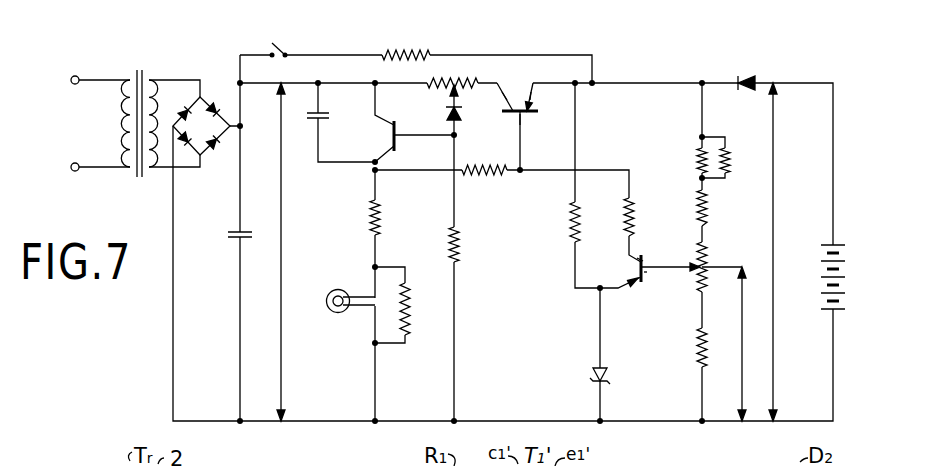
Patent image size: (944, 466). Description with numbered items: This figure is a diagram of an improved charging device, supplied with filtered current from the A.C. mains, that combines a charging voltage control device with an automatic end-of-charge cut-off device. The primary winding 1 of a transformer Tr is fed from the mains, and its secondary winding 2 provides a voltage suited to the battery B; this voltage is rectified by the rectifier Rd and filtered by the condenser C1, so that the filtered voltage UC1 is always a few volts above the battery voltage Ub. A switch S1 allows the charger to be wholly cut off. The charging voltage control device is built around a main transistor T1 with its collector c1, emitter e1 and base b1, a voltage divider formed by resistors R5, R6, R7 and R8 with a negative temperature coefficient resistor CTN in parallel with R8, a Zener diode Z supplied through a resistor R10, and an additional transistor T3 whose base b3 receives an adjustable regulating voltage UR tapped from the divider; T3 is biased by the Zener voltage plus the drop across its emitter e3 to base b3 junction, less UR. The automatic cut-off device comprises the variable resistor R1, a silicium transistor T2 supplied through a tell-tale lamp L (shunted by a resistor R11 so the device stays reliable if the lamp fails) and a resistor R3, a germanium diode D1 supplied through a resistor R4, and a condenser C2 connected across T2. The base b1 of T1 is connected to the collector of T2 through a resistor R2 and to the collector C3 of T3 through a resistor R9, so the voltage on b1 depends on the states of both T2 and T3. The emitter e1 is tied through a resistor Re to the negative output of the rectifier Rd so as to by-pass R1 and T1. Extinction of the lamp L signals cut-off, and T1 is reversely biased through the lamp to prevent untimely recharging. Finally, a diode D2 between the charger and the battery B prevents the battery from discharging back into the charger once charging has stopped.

The transformer Tr is at (140, 111).
The primary winding 1 is at (122, 110).
The secondary winding 2 is at (151, 78).
The rectifier Rd is at (213, 146).
The switch S1 is at (279, 56).
The resistor Re is at (421, 48).
The condenser C1 is at (235, 232).
The filtered voltage UC1 is at (285, 252).
The condenser C2 is at (322, 114).
The silicium transistor T2 is at (386, 137).
The germanium diode D1 is at (448, 119).
The variable resistor R1 is at (484, 70).
The main transistor T1 is at (518, 98).
The collector of transistor T1 c1 is at (502, 99).
The emitter of transistor T1 e1 is at (535, 94).
The base of transistor T1 b1 is at (524, 114).
The resistor R2 is at (471, 178).
The resistor R3 is at (370, 220).
The lamp L is at (338, 314).
The resistor R11 is at (408, 323).
The resistor R4 is at (458, 246).
The resistor R10 is at (570, 210).
The resistor R9 is at (634, 222).
The additional transistor T3 is at (630, 268).
The collector of transistor T3 C3 is at (640, 261).
The emitter of transistor T3 e3 is at (632, 287).
The base of transistor T3 b3 is at (646, 284).
The Zener diode Z is at (591, 382).
The resistor R8 is at (700, 151).
The negative temperature coefficient resistor CTN is at (726, 149).
The resistor R7 is at (707, 205).
The resistor R6 is at (698, 270).
The resistor R5 is at (682, 374).
The regulating voltage UR is at (740, 344).
The battery voltage Ub is at (778, 252).
The diode D2 is at (751, 76).
The battery B is at (845, 277).